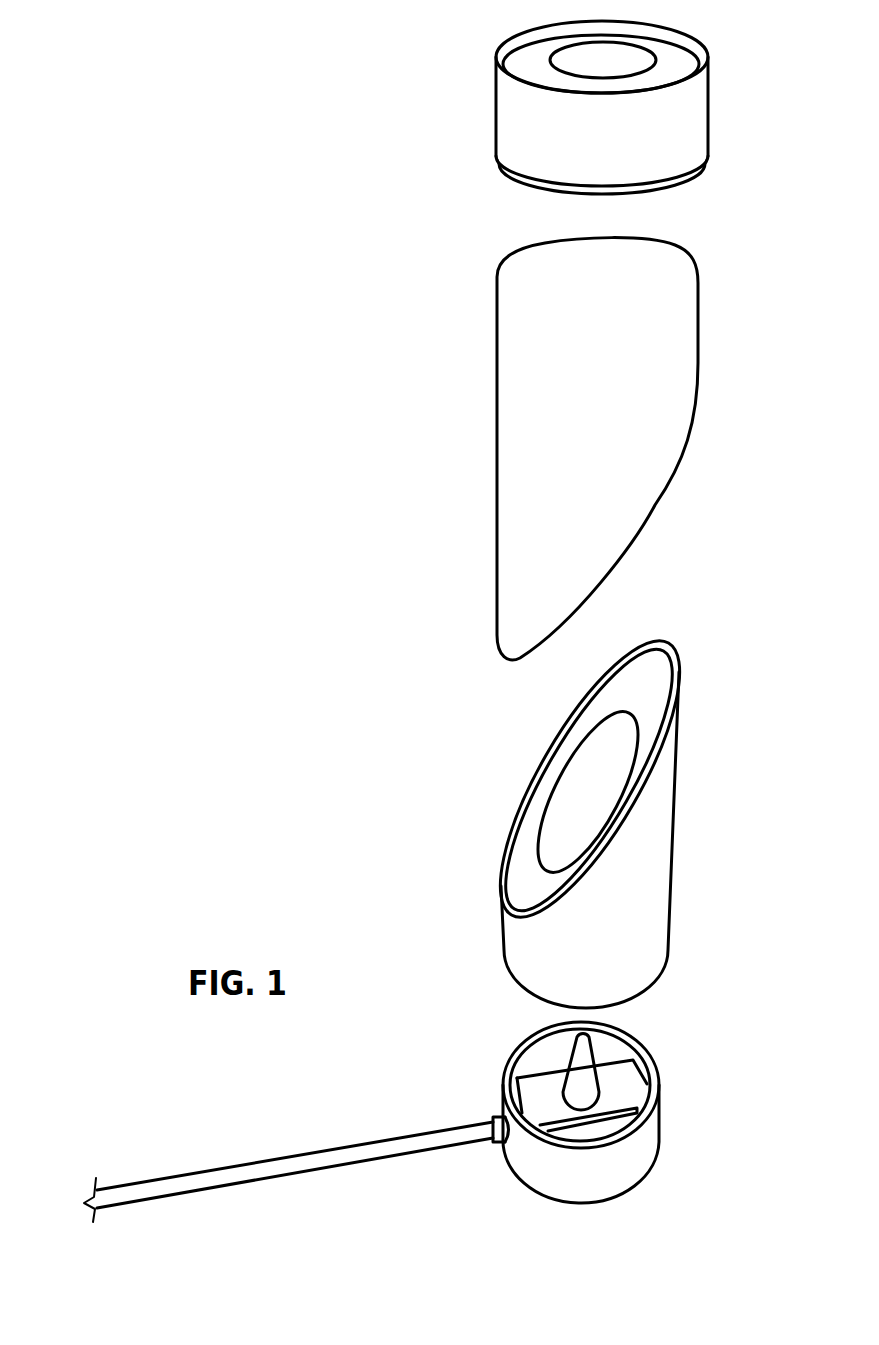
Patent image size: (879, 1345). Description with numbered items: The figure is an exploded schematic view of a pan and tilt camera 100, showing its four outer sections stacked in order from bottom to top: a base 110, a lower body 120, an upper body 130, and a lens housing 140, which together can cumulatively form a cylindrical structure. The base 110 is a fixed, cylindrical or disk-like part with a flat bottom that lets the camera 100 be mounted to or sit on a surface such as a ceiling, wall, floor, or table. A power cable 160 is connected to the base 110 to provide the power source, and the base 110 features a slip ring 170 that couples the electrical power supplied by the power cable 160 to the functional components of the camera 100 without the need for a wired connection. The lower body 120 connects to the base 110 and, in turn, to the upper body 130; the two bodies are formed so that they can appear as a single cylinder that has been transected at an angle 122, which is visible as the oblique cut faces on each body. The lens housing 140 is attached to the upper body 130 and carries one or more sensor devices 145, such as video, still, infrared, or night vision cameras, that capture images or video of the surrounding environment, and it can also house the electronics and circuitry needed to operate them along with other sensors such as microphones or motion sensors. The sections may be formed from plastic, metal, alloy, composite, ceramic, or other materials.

The pan and tilt camera 100 is at (170, 88).
The base 110 is at (637, 1152).
The lower body 120 is at (643, 878).
The angle 122 is at (653, 502).
The upper body 130 is at (668, 355).
The lens housing 140 is at (695, 127).
The sensor device 145 is at (575, 57).
The power cable 160 is at (363, 1165).
The slip ring 170 is at (578, 1052).